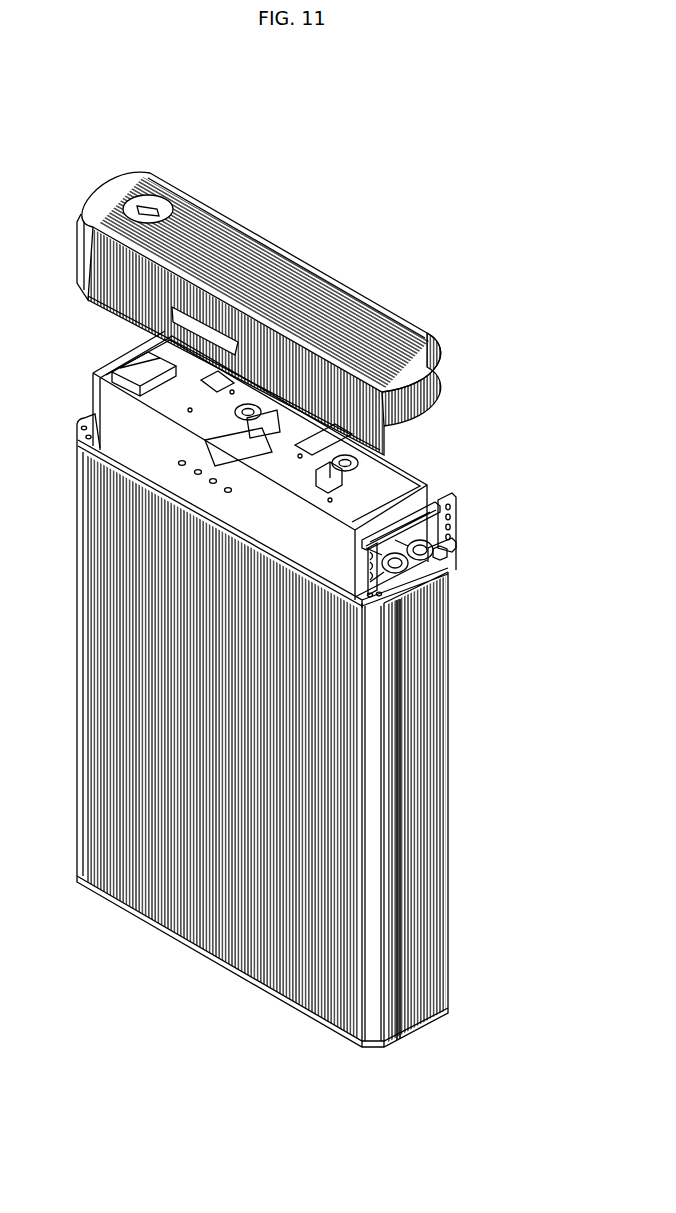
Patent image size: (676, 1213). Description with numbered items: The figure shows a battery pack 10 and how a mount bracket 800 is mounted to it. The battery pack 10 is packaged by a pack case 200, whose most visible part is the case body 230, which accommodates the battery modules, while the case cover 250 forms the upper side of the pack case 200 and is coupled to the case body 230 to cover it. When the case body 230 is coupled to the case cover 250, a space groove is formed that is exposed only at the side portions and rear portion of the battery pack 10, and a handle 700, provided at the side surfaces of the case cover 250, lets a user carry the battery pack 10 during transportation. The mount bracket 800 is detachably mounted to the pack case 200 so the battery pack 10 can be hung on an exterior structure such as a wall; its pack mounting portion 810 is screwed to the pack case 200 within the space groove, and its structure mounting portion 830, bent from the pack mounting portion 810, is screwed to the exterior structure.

The battery pack 10 is at (84, 132).
The pack case 200 is at (87, 918).
The case body 230 is at (466, 716).
The case cover 250 is at (298, 244).
The handle 700 is at (426, 410).
The mount bracket 800 is at (470, 535).
The pack mounting portion 810 is at (434, 500).
The structure mounting portion 830 is at (452, 510).